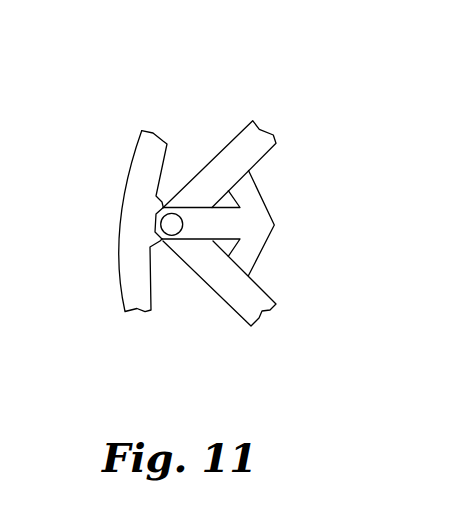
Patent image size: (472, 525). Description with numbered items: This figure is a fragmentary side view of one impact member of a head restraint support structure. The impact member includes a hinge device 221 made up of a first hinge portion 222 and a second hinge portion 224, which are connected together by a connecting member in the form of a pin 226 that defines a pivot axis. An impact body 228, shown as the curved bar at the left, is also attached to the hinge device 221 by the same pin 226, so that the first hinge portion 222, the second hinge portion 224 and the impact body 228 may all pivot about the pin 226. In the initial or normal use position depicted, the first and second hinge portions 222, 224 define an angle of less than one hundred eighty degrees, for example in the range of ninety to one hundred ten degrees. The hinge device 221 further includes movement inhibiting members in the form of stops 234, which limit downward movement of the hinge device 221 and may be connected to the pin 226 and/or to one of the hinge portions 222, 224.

The hinge device 221 is at (177, 201).
The first hinge portion 222 is at (232, 138).
The second hinge portion 224 is at (208, 283).
The pin 226 is at (160, 226).
The impact body 228 is at (118, 285).
The stops 234 is at (265, 243).